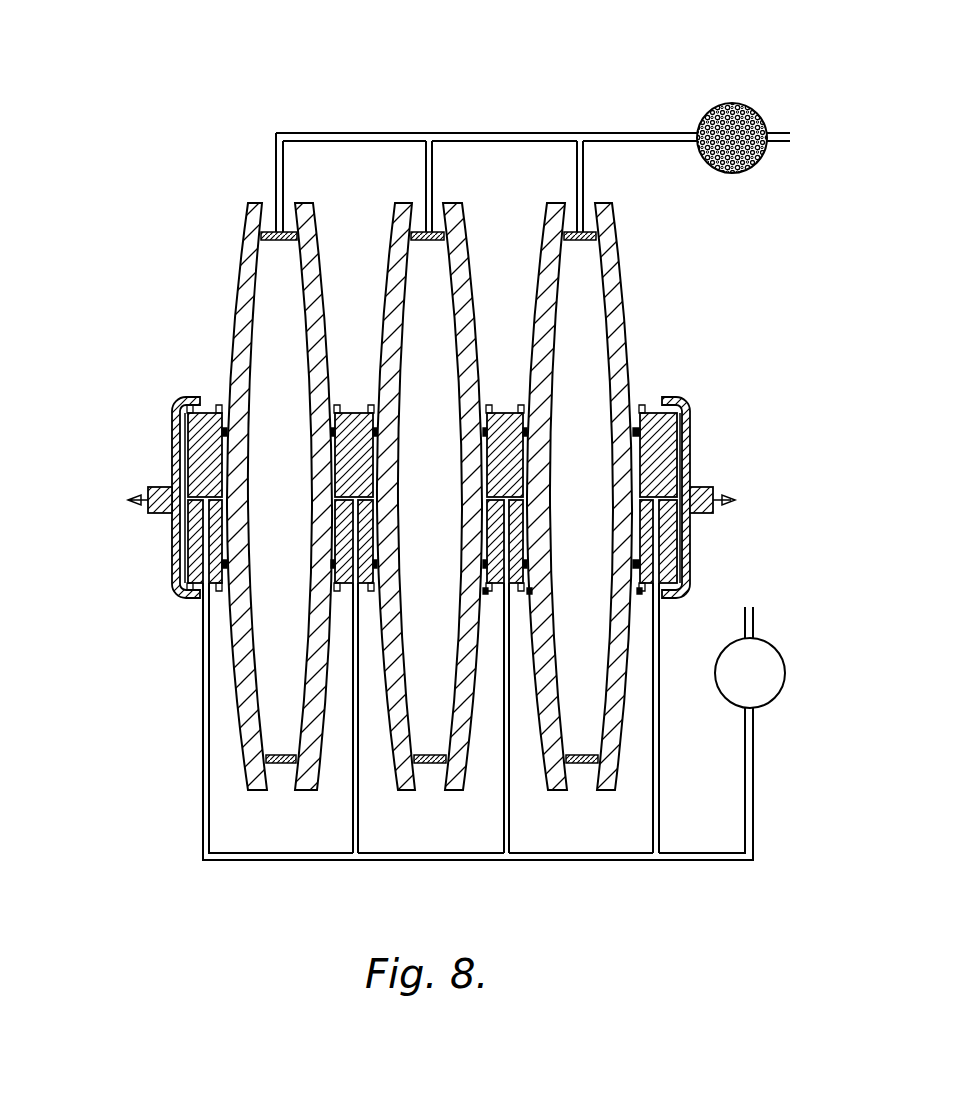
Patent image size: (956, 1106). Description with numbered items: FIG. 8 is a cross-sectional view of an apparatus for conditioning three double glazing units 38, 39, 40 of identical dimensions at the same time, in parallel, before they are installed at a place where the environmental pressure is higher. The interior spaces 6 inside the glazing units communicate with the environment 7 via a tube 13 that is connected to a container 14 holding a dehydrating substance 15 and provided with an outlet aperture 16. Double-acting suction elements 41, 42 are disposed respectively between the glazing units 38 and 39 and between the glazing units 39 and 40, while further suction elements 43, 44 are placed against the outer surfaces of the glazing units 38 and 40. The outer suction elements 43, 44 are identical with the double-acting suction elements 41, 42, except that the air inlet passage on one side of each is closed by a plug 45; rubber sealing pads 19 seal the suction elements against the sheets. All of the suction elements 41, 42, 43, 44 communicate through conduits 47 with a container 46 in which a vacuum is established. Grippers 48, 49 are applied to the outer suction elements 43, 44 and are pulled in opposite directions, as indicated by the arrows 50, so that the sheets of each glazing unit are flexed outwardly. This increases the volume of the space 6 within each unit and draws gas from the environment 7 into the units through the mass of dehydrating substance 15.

The tube 13 is at (385, 133).
The container 14 is at (718, 103).
The dehydrating substance 15 is at (740, 118).
The outlet aperture 16 is at (773, 142).
The environment 7 is at (764, 285).
The double glazing unit 38 is at (246, 234).
The double glazing unit 39 is at (398, 232).
The double glazing unit 40 is at (548, 232).
The interior space 6 is at (430, 297).
The double-acting suction element 41 is at (358, 412).
The double-acting suction element 42 is at (504, 418).
The suction element 43 is at (203, 400).
The suction element 44 is at (653, 440).
The plug 45 is at (681, 465).
The container 46 is at (757, 657).
The conduit 47 is at (203, 817).
The gripper 48 is at (166, 490).
The gripper 49 is at (708, 513).
The arrow 50 is at (714, 490).
The rubber sealing pad 19 is at (485, 594).